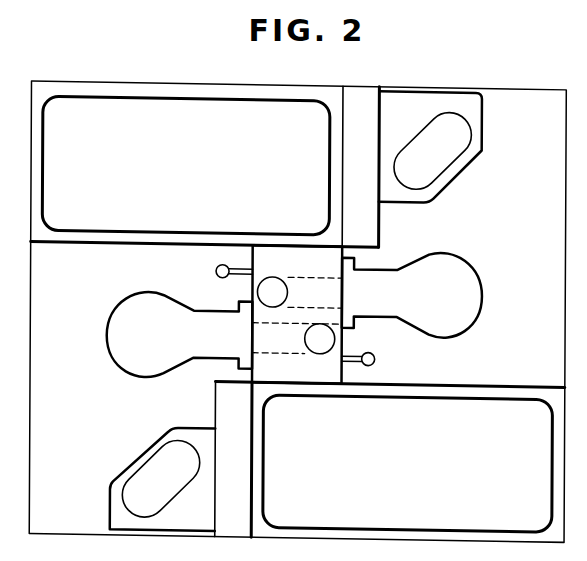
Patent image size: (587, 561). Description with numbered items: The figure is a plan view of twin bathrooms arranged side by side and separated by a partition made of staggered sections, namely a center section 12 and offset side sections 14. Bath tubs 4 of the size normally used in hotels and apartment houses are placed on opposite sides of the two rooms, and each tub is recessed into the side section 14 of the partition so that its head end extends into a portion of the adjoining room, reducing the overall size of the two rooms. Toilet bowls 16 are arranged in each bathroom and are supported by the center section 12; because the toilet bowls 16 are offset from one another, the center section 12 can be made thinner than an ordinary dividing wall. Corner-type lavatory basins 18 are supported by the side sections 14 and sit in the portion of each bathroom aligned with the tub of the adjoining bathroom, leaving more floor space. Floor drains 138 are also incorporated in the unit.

The bath tub 4 is at (169, 242).
The center section 12 is at (344, 324).
The side section 14 is at (375, 219).
The toilet bowl 16 is at (132, 355).
The lavatory basin 18 is at (467, 160).
The floor drain 138 is at (217, 268).